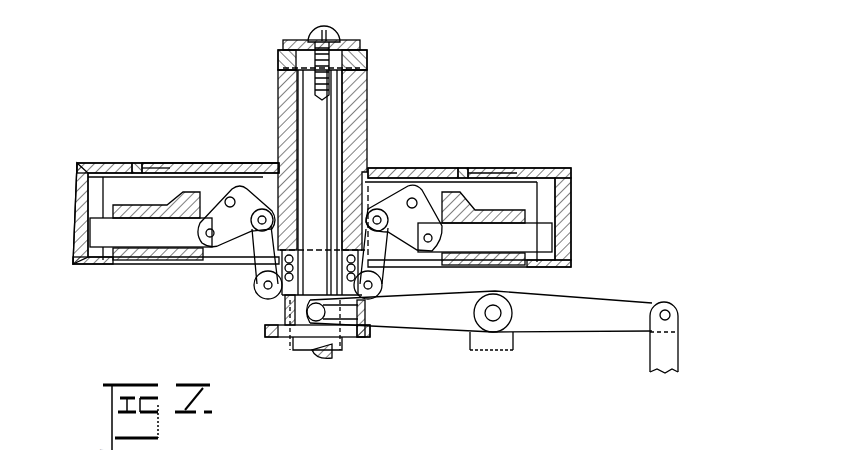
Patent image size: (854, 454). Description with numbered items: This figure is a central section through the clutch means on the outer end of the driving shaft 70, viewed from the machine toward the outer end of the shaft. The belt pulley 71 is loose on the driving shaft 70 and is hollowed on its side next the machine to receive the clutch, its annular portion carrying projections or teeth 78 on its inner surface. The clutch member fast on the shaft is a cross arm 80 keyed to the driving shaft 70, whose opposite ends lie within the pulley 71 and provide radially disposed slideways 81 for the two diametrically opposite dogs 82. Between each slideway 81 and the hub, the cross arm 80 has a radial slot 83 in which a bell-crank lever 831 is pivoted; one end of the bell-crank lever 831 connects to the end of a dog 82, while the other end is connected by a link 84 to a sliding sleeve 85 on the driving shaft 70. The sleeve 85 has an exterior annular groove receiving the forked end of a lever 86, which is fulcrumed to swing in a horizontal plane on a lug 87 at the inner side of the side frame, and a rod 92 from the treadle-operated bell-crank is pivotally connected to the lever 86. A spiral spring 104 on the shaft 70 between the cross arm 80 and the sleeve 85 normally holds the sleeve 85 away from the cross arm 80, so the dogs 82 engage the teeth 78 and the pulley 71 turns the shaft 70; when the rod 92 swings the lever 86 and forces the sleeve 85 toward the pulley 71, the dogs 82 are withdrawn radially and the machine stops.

The driving shaft 70 is at (352, 375).
The belt pulley 71 is at (197, 165).
The projections or teeth 78 is at (93, 193).
The cross arm 80 is at (436, 190).
The slideways 81 is at (488, 210).
The dogs 82 is at (321, 235).
The radial slots 83 is at (388, 159).
The bell-crank lever 831 is at (320, 218).
The link 84 is at (262, 263).
The sliding sleeve 85 is at (268, 332).
The lever 86 is at (480, 311).
The lug 87 is at (500, 350).
The rod 92 is at (652, 352).
The spiral spring 104 is at (292, 316).